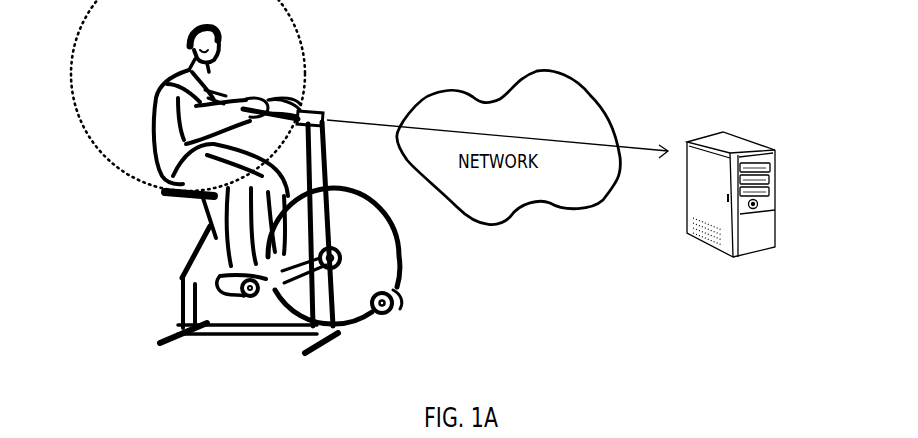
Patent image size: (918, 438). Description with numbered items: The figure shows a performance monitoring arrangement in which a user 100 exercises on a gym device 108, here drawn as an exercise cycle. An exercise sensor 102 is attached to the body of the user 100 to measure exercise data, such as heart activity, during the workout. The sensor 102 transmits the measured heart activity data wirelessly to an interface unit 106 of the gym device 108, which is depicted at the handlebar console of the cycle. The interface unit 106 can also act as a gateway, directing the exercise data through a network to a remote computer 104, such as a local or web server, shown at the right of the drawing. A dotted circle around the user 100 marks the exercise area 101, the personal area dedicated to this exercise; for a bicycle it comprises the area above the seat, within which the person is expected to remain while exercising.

The user 100 is at (172, 68).
The exercise area 101 is at (87, 132).
The exercise sensor 102 is at (212, 101).
The remote computer 104 is at (748, 121).
The interface unit 106 is at (321, 117).
The gym device 108 is at (183, 281).